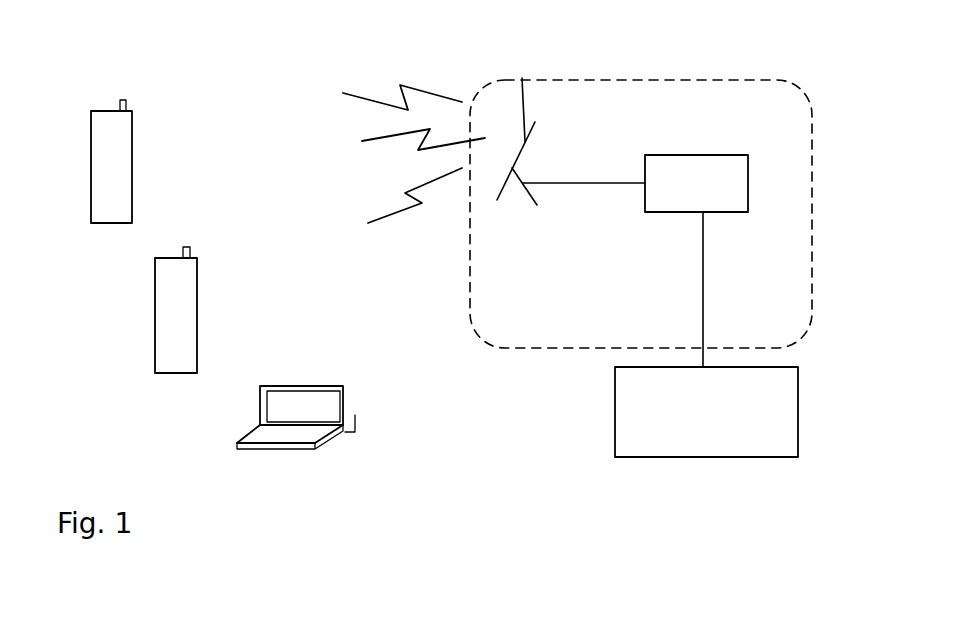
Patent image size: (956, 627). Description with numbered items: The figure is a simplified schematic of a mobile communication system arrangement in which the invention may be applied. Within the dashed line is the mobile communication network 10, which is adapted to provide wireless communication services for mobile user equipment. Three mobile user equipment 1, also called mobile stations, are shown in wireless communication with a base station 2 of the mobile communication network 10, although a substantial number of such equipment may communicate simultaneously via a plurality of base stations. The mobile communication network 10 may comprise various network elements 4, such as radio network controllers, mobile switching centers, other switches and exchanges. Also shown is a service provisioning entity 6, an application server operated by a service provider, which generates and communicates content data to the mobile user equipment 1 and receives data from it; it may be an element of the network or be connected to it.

The mobile user equipment 1 is at (132, 122).
The base station 2 is at (522, 78).
The network elements 4 is at (660, 165).
The service provisioning entity 6 is at (650, 420).
The mobile communication network 10 is at (543, 386).